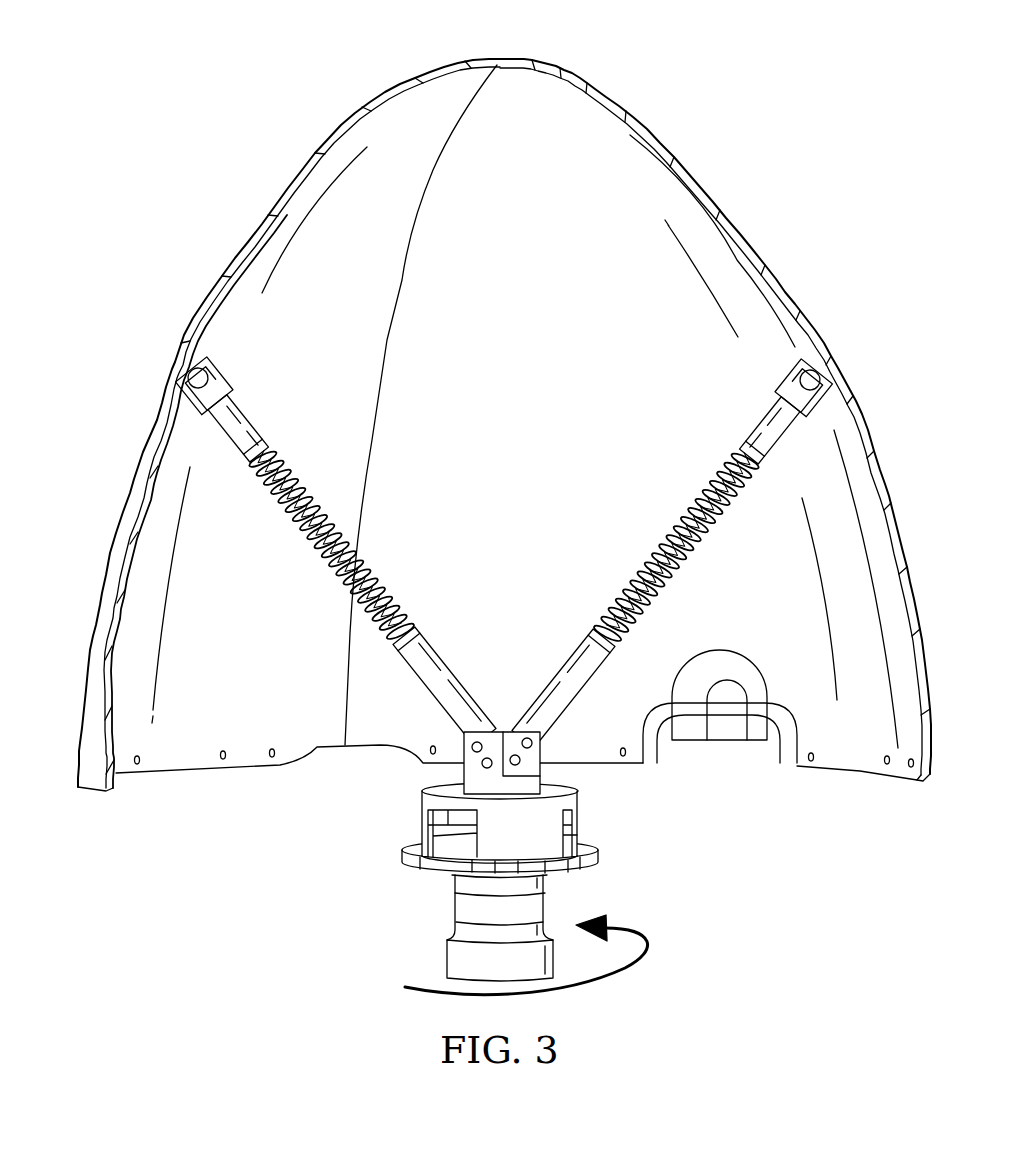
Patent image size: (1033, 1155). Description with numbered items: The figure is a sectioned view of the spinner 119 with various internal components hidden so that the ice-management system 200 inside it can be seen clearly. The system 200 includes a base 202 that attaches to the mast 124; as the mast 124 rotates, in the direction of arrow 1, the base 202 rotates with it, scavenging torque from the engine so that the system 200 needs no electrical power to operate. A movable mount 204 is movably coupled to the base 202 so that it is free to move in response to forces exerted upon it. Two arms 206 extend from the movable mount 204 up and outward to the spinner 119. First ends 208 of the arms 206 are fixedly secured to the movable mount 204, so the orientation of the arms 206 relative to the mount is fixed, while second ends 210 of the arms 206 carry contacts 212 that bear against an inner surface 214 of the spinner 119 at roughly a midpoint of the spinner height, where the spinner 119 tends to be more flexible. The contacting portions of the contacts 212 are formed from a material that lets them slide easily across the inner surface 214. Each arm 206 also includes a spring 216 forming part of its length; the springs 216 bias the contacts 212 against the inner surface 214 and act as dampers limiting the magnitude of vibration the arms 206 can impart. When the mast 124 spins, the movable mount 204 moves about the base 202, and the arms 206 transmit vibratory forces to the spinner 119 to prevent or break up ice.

The ice-management system 200 is at (278, 66).
The spinner 119 is at (113, 518).
The inner surface 214 is at (537, 266).
The arms 206 is at (286, 600).
The contacts 212 is at (216, 372).
The second ends 210 is at (245, 418).
The springs 216 is at (306, 497).
The first ends 208 is at (430, 662).
The movable mount 204 is at (465, 772).
The base 202 is at (598, 817).
The mast 124 is at (455, 905).
The arrow 1 is at (647, 953).